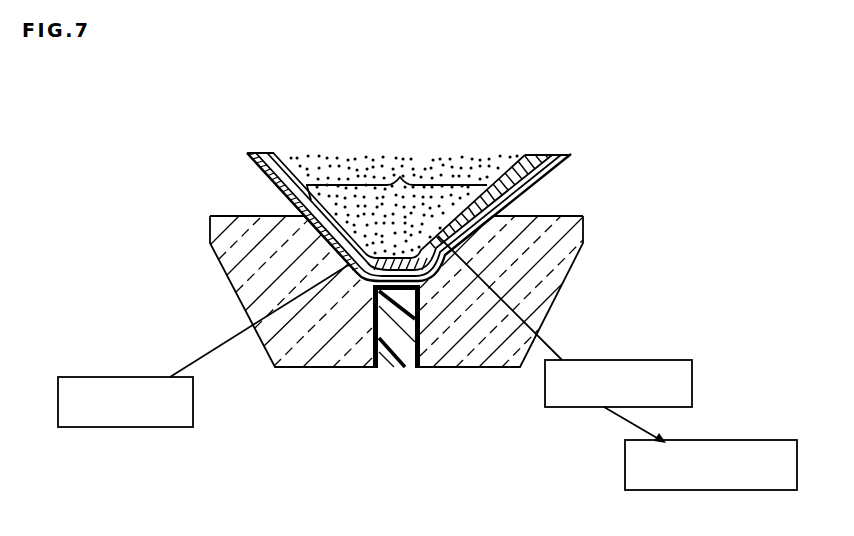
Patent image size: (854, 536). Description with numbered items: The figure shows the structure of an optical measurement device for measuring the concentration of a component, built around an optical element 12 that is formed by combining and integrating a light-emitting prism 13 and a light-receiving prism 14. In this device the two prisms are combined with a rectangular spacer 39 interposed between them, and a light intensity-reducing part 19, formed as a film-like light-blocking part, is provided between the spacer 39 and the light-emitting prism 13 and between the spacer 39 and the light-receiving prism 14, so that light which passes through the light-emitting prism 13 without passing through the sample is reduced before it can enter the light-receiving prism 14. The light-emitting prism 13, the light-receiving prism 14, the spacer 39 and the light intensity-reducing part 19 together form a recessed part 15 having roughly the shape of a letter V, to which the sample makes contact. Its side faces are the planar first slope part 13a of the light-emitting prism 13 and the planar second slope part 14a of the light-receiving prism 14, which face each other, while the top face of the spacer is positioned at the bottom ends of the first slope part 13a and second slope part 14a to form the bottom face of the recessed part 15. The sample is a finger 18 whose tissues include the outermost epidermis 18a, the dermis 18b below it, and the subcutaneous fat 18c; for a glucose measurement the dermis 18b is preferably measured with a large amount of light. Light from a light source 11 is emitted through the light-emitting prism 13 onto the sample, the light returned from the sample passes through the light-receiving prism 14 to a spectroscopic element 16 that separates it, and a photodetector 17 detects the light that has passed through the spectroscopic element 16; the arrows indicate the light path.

The light source 11 is at (125, 382).
The optical element 12 is at (198, 232).
The light-emitting prism 13 is at (262, 277).
The first slope part 13a is at (320, 233).
The light-receiving prism 14 is at (534, 262).
The second slope part 14a is at (484, 237).
The recessed part 15 is at (400, 177).
The spectroscopic element 16 is at (641, 364).
The photodetector 17 is at (732, 444).
The finger 18 is at (679, 50).
The epidermis 18a is at (572, 163).
The dermis 18b is at (537, 160).
The subcutaneous fat 18c is at (497, 158).
The light intensity-reducing part 19 is at (419, 370).
The spacer 39 is at (394, 370).